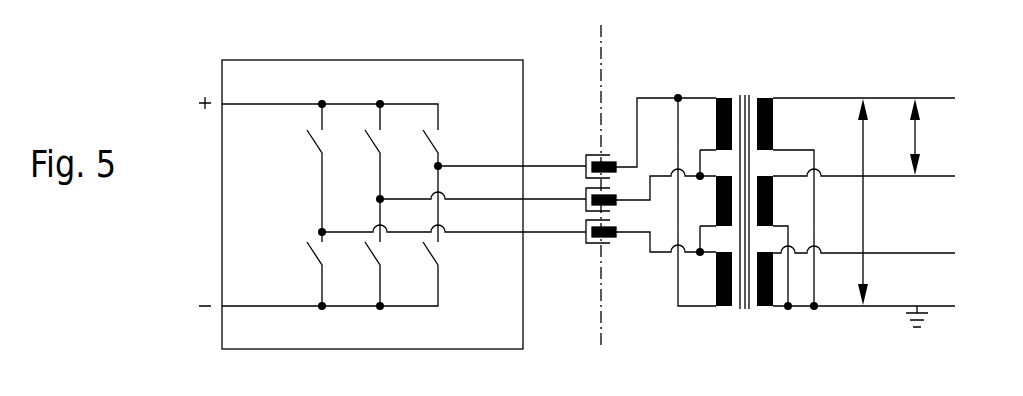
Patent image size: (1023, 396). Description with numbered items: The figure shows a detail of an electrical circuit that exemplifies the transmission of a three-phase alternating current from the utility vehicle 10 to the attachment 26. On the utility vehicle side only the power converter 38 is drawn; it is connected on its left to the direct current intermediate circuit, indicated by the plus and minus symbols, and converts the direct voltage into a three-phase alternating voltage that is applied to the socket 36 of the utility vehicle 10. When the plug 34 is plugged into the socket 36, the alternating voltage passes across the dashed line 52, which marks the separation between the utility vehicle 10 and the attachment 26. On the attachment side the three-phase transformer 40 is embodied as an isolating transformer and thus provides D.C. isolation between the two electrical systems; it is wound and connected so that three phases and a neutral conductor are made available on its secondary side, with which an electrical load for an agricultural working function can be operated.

The utility vehicle 10 is at (448, 42).
The attachment 26 is at (884, 75).
The plug 34 is at (610, 148).
The socket 36 is at (591, 249).
The power converter 38 is at (338, 61).
The transformer 40 is at (756, 83).
The dashed line 52 is at (601, 46).